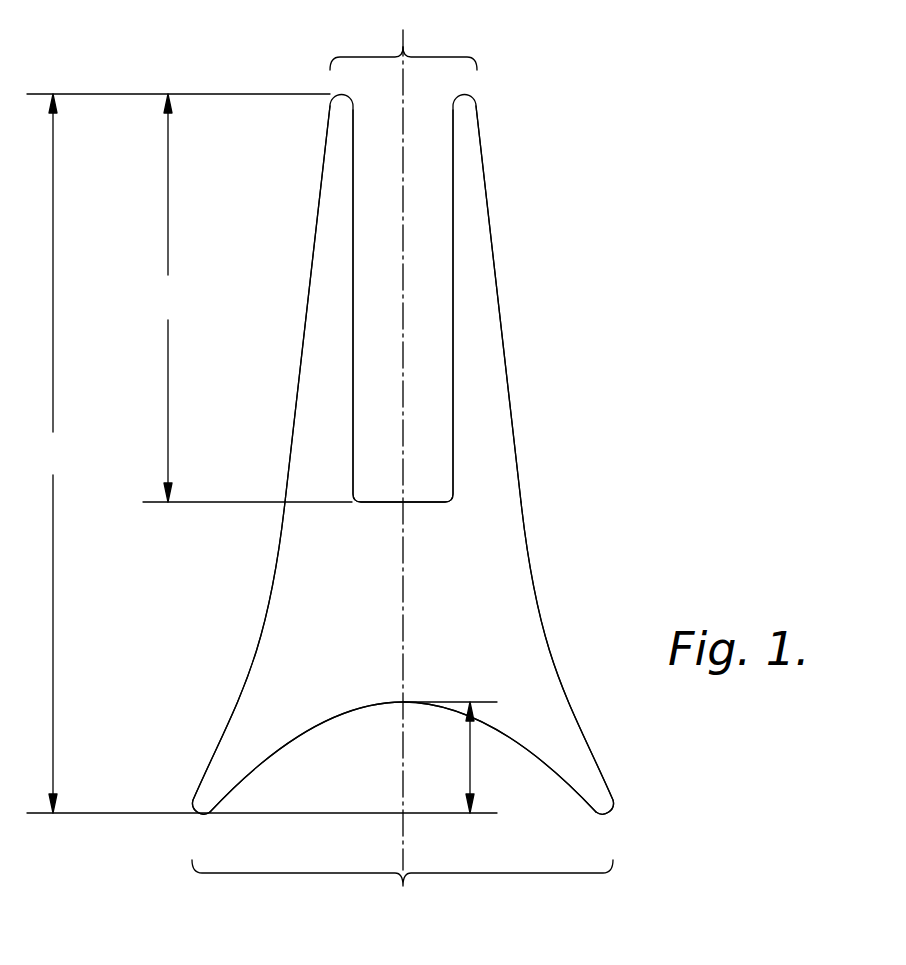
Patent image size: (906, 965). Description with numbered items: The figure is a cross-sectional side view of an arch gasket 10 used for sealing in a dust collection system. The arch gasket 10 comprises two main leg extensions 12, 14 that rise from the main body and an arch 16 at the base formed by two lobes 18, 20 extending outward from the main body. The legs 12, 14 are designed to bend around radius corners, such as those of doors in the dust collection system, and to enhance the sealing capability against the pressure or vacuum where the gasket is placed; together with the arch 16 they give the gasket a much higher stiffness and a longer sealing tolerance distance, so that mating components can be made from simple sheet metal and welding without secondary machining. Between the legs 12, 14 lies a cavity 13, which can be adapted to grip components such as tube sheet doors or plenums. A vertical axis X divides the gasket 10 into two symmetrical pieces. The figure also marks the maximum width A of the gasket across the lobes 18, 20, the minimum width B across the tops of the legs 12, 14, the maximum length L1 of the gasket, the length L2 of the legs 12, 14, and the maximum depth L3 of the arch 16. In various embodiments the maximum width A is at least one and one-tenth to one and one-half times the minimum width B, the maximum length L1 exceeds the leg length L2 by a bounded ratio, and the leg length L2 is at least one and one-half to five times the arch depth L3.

The arch gasket 10 is at (555, 403).
The main leg extension 12 is at (488, 207).
The cavity 13 is at (419, 120).
The main leg extension 14 is at (320, 228).
The arch 16 is at (403, 703).
The lobe 18 is at (588, 755).
The lobe 20 is at (220, 752).
The maximum width A is at (425, 876).
The minimum width B is at (367, 54).
The vertical axis X is at (403, 46).
The maximum length L1 is at (262, 453).
The length of the legs L2 is at (247, 298).
The maximum depth of the arch L3 is at (450, 757).